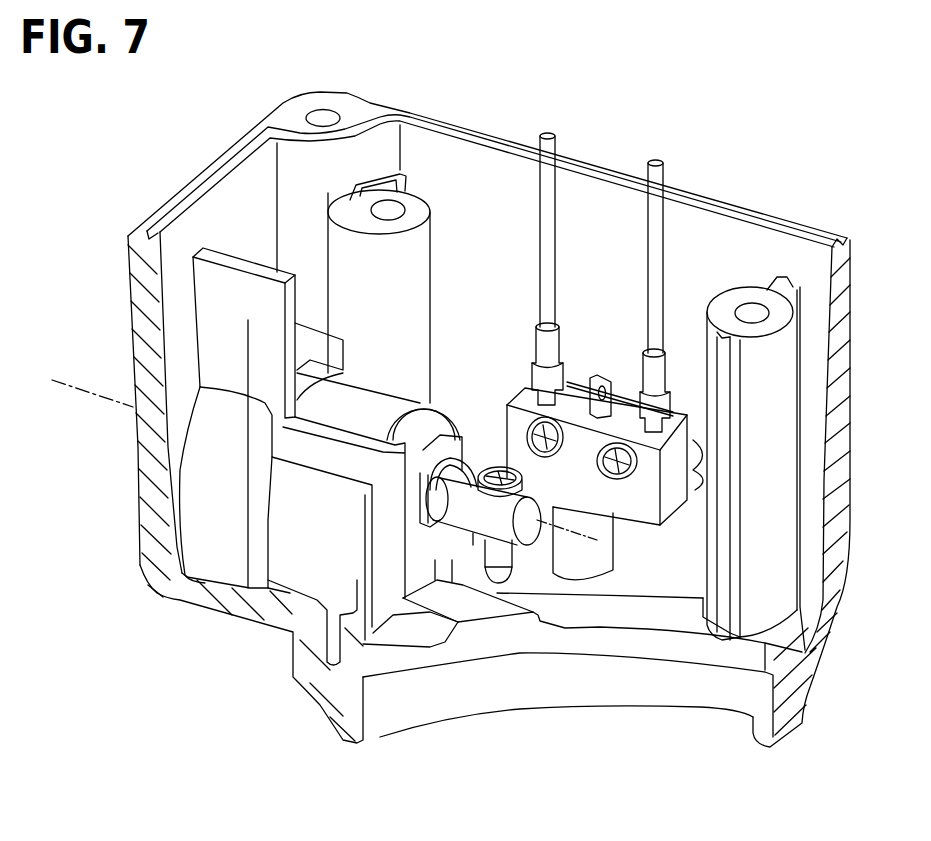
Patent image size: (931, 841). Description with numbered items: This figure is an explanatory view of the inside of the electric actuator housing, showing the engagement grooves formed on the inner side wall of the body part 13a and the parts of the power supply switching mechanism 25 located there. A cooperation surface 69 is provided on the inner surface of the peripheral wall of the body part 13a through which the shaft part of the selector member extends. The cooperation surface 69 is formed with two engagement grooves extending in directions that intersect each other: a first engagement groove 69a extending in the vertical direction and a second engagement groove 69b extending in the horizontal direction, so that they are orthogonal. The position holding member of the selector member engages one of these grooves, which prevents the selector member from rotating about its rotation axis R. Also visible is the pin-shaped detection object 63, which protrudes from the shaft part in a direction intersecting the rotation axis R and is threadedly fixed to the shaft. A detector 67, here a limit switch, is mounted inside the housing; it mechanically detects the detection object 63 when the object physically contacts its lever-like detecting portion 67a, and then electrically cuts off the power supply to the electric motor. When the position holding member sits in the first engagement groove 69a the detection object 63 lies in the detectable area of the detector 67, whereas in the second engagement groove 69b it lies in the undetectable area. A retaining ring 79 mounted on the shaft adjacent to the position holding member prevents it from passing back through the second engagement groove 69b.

The power supply switching mechanism 25 is at (720, 257).
The body part 13a is at (152, 518).
The rotation axis R is at (72, 385).
The cooperation surface 69 is at (418, 447).
The first engagement groove 69a is at (413, 447).
The second engagement groove 69b is at (400, 503).
The detection object 63 is at (498, 567).
The retaining ring 79 is at (477, 467).
The detector 67 is at (640, 507).
The detecting portion 67a is at (597, 527).